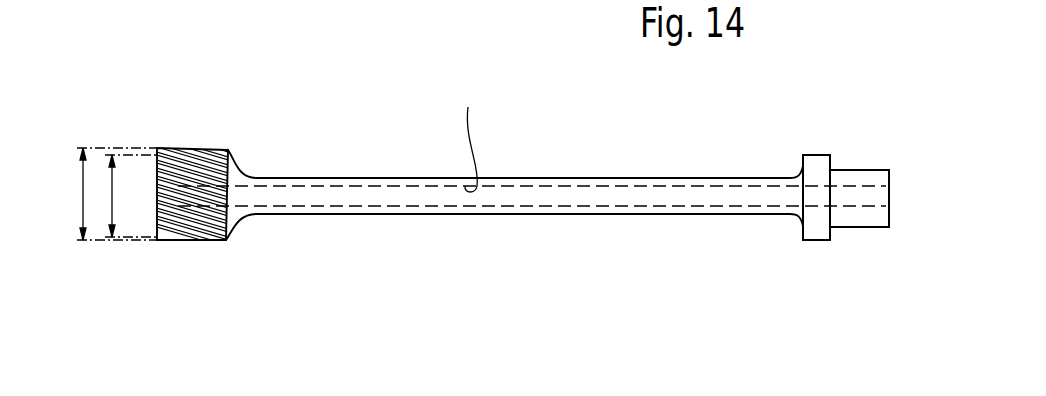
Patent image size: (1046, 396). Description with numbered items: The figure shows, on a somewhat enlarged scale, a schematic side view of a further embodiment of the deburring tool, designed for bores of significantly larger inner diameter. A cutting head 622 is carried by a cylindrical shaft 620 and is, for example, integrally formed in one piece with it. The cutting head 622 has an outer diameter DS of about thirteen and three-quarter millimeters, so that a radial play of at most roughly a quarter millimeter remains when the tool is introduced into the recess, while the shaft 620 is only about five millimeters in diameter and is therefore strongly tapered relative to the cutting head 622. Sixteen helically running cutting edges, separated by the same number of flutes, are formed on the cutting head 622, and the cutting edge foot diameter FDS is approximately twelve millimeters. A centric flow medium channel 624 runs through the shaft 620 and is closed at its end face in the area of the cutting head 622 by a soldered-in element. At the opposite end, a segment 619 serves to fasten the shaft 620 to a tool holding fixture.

The segment 619 is at (885, 255).
The cylindrical shaft 620 is at (530, 214).
The cutting head 622 is at (228, 253).
The centric flow medium channel 624 is at (469, 135).
The outer diameter DS is at (82, 198).
The cutting edge foot diameter FDS is at (113, 197).